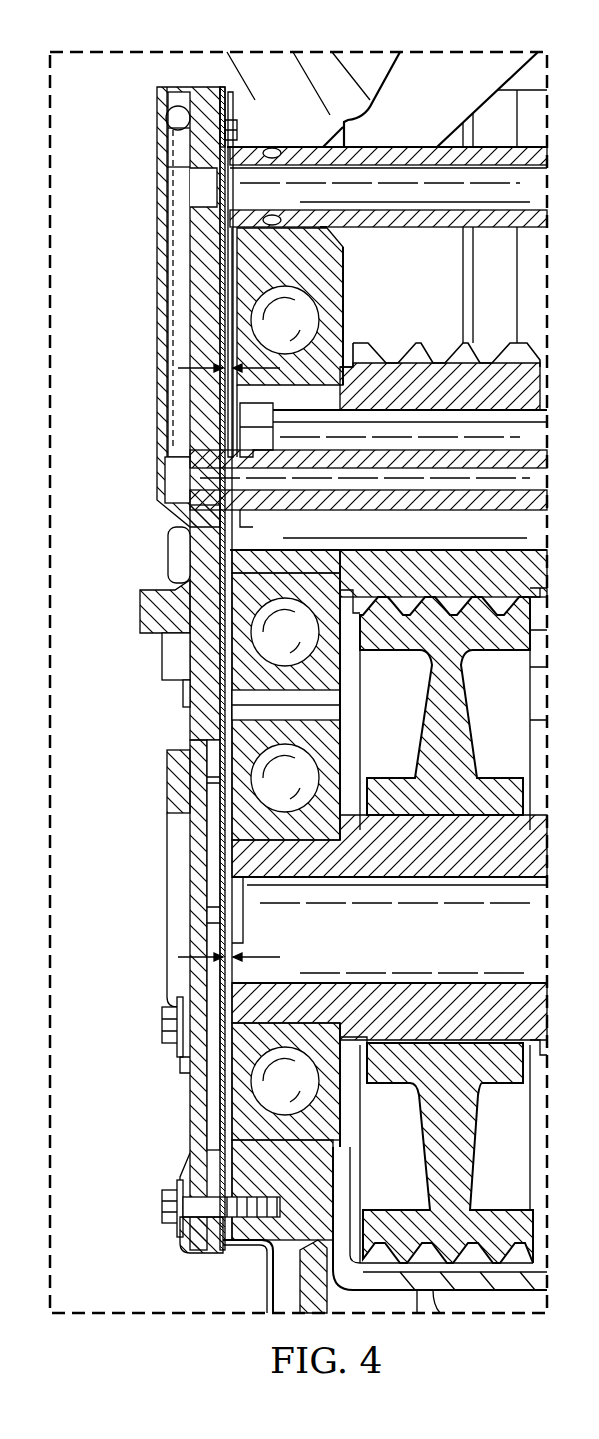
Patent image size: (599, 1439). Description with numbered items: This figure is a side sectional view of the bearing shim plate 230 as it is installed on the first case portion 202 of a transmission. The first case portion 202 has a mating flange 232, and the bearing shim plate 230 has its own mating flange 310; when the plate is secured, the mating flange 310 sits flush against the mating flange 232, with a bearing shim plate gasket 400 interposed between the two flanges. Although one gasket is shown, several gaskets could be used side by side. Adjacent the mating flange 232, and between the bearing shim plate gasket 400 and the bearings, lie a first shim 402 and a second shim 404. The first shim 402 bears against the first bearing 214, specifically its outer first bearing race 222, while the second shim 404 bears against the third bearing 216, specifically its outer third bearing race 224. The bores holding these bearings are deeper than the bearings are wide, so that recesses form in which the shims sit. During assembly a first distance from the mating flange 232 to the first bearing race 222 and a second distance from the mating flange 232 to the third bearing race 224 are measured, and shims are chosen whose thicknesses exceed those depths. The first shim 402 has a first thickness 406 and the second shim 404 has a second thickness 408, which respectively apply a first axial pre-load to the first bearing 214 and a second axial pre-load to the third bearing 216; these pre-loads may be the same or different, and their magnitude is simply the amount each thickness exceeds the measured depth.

The first case portion 202 is at (378, 75).
The first bearing 214 is at (320, 326).
The third bearing 216 is at (284, 798).
The first bearing race 222 is at (343, 274).
The third bearing race 224 is at (343, 731).
The bearing shim plate 230 is at (140, 613).
The mating flange 232 is at (220, 102).
The mating flange 310 is at (228, 122).
The bearing shim plate gasket 400 is at (220, 238).
The first shim 402 is at (227, 273).
The second shim 404 is at (207, 745).
The first thickness 406 is at (178, 368).
The second thickness 408 is at (280, 957).